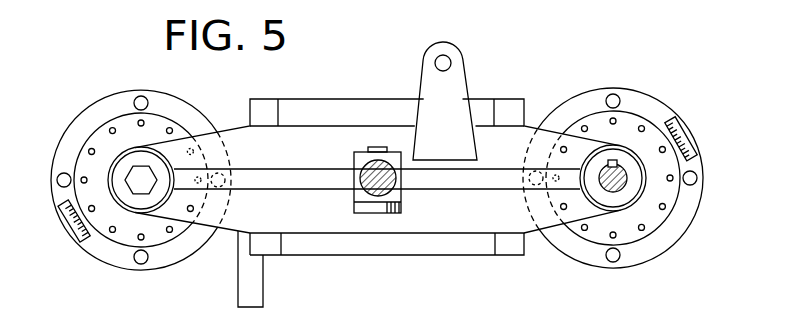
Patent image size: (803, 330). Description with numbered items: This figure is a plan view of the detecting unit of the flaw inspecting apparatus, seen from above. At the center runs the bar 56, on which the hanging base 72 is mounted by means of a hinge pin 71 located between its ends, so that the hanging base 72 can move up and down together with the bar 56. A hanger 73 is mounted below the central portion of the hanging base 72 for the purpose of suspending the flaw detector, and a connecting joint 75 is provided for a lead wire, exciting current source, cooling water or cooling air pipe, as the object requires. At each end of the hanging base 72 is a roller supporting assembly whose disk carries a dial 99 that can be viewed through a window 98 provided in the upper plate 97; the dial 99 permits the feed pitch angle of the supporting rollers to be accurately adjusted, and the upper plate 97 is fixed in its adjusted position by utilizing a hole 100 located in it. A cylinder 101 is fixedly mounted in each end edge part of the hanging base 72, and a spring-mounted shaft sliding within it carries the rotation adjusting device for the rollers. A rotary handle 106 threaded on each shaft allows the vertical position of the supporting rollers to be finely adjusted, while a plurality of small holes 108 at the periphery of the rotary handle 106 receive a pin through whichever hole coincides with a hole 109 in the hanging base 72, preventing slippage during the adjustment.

The bar 56 is at (367, 165).
The hinge pin 71 is at (373, 207).
The hanging base 72 is at (465, 212).
The hanger 73 is at (483, 108).
The connecting joint 75 is at (256, 270).
The upper plate 97 is at (582, 102).
The window 98 is at (668, 122).
The dial 99 is at (685, 128).
The hole 100 is at (692, 186).
The cylinder 101 is at (619, 200).
The rotary handle 106 is at (658, 217).
The small holes 108 is at (610, 234).
The hole 109 is at (562, 207).